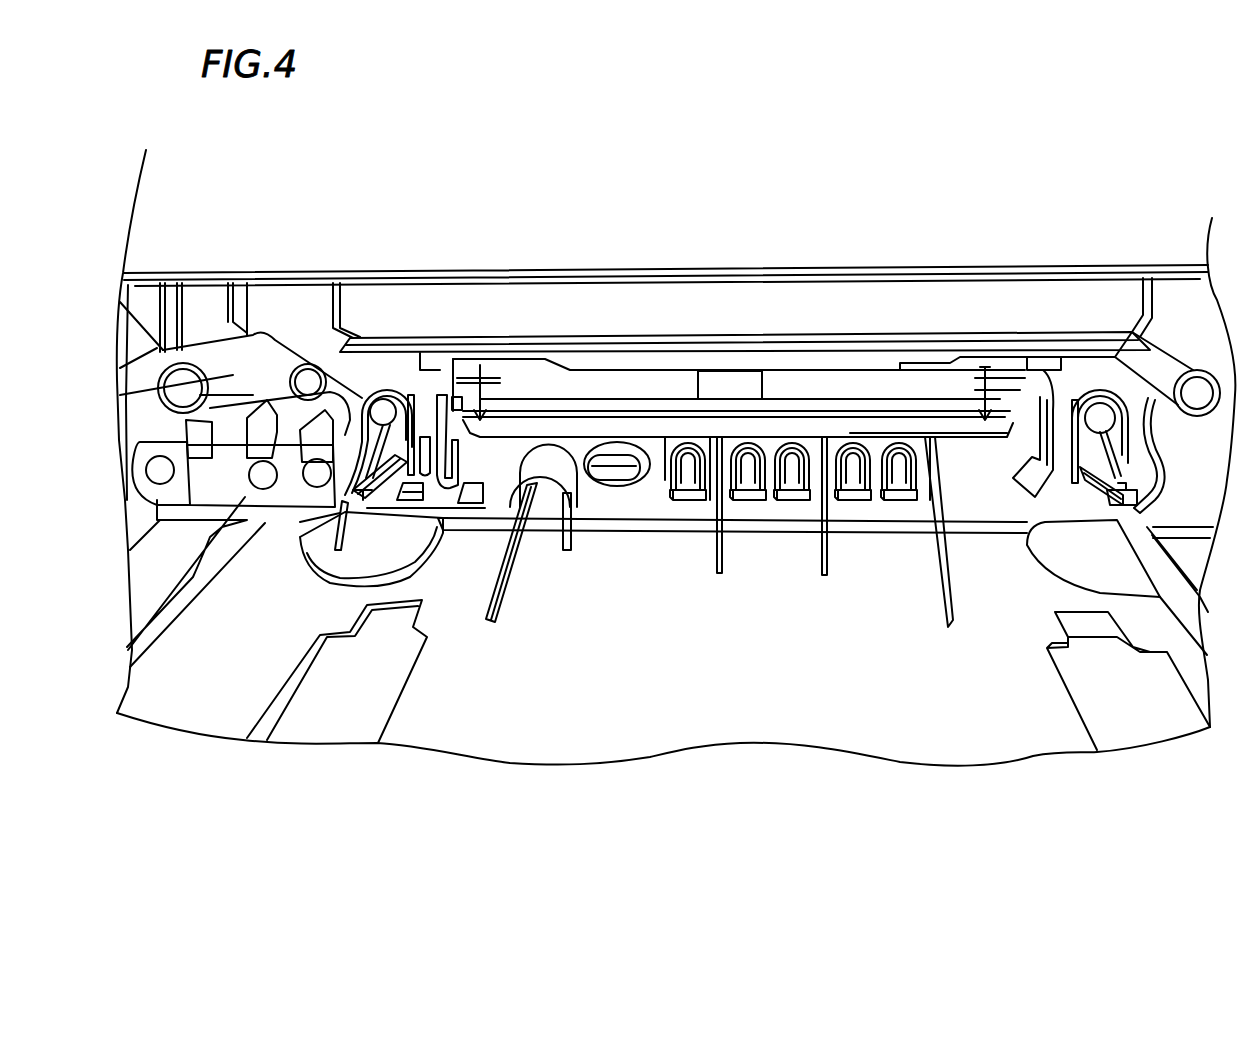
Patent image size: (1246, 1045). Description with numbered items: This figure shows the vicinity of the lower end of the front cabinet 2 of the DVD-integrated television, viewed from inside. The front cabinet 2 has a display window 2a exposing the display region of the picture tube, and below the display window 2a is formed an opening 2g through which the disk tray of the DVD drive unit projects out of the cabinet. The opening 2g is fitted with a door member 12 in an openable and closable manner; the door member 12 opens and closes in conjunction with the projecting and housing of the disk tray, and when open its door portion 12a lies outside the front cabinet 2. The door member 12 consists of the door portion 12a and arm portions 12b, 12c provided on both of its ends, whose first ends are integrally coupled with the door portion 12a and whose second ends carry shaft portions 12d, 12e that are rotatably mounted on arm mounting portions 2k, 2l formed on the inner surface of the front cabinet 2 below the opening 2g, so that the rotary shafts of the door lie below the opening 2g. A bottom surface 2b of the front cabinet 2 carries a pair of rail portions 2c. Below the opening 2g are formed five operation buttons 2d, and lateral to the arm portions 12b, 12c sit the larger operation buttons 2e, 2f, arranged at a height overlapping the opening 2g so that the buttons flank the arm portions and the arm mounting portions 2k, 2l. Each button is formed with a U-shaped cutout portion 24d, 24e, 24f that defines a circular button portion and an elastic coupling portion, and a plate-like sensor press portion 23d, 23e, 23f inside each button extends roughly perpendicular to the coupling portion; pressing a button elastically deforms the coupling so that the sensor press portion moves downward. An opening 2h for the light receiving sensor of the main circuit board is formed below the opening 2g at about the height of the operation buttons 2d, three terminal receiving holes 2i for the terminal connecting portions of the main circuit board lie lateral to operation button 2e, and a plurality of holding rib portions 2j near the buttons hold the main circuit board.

The front cabinet 2 is at (1093, 270).
The display window 2a is at (1183, 266).
The bottom surface 2b is at (518, 707).
The rail portions 2c is at (332, 703).
The operation buttons 2d is at (775, 430).
The operation button 2e is at (389, 374).
The operation button 2f is at (1110, 374).
The opening 2g is at (950, 362).
The opening 2h is at (608, 478).
The terminal receiving holes 2i is at (160, 466).
The holding rib portions 2j is at (338, 502).
The arm mounting portion 2k is at (411, 450).
The arm mounting portion 2l is at (1058, 468).
The door member 12 is at (665, 393).
The door portion 12a is at (615, 393).
The arm portion 12b is at (452, 393).
The arm portion 12c is at (1038, 395).
The shaft portion 12d is at (434, 385).
The shaft portion 12e is at (1049, 440).
The sensor press portion 23d is at (687, 497).
The sensor press portion 23e is at (360, 490).
The sensor press portion 23f is at (1120, 500).
The U-shaped cutout portion 24d is at (677, 497).
The U-shaped cutout portion 24e is at (412, 495).
The U-shaped cutout portion 24f is at (1077, 490).